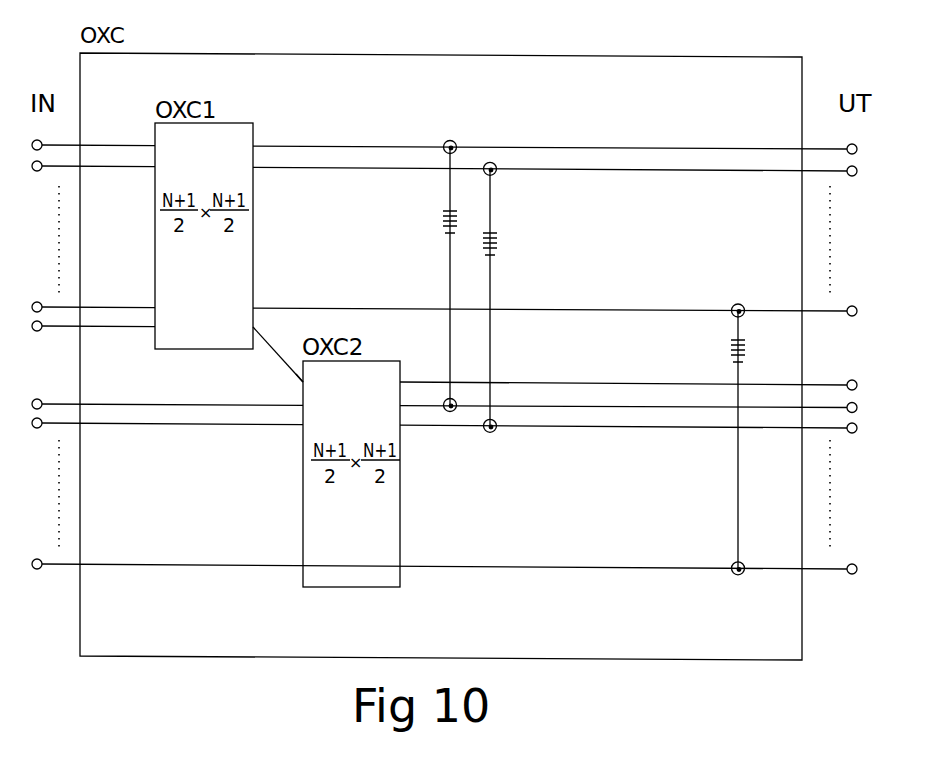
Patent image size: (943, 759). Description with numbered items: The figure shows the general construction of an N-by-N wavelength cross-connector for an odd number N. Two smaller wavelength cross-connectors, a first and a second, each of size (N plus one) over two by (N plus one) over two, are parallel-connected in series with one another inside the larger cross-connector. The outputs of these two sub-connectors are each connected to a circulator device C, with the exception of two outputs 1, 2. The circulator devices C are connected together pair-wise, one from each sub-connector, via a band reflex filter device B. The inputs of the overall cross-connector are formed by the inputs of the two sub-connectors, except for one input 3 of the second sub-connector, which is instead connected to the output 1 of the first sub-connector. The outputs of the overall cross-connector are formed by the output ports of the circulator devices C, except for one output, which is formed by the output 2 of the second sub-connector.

The output 1 is at (254, 326).
The output 2 is at (402, 382).
The input 3 is at (302, 383).
The circulator device C is at (477, 453).
The band reflex filter device B is at (585, 289).